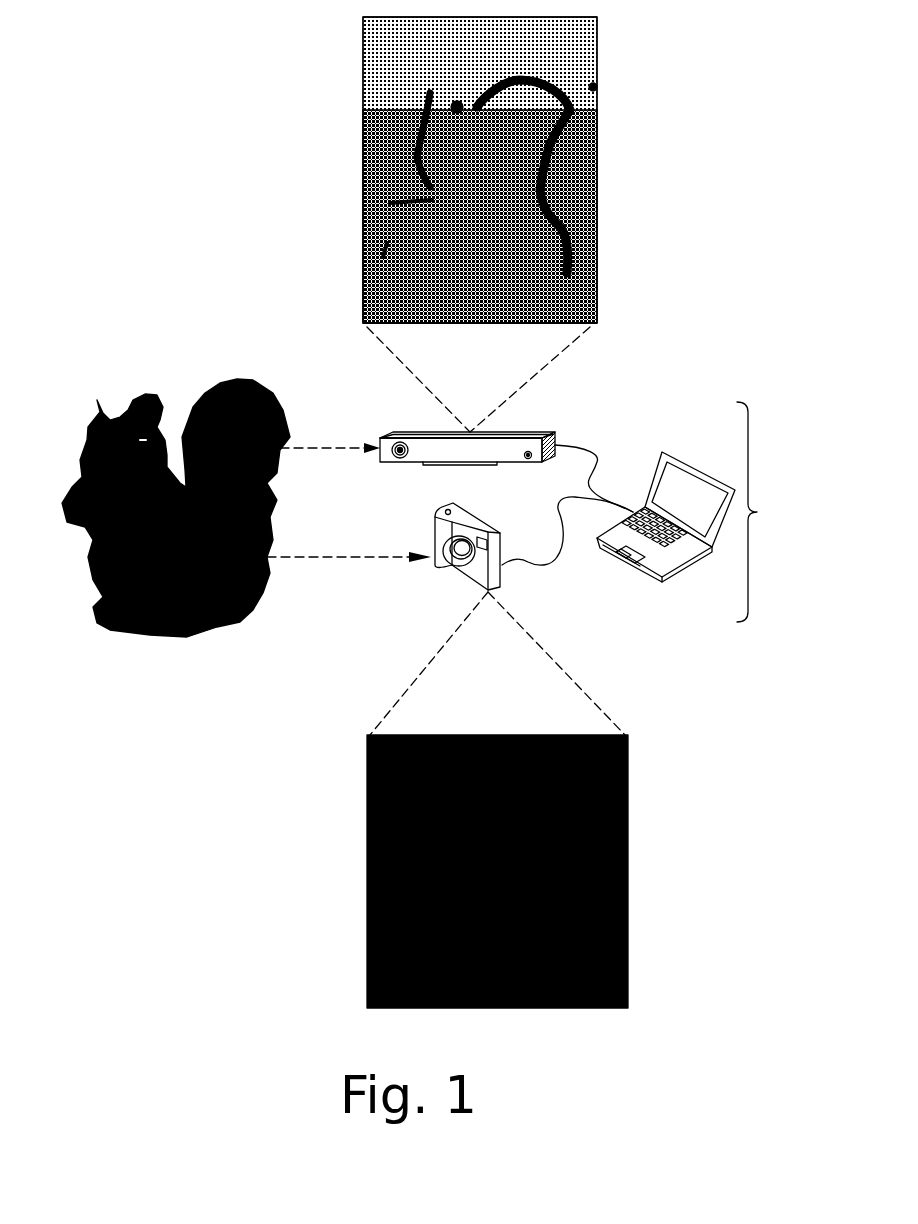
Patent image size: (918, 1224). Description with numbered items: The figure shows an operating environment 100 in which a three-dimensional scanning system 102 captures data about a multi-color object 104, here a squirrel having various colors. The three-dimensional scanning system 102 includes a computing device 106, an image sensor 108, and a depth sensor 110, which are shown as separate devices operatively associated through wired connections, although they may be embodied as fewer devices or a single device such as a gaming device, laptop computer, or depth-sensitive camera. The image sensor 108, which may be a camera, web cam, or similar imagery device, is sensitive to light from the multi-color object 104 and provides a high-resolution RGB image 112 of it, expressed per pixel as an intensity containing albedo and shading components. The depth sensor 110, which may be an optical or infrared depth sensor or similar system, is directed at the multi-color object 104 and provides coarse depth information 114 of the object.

The operating environment 100 is at (131, 57).
The 3D scanning system 102 is at (757, 512).
The multi-color object 104 is at (93, 388).
The computing device 106 is at (647, 577).
The image sensor 108 is at (502, 567).
The depth sensor 110 is at (540, 432).
The high-resolution RGB image 112 is at (367, 782).
The coarse depth information 114 is at (363, 66).